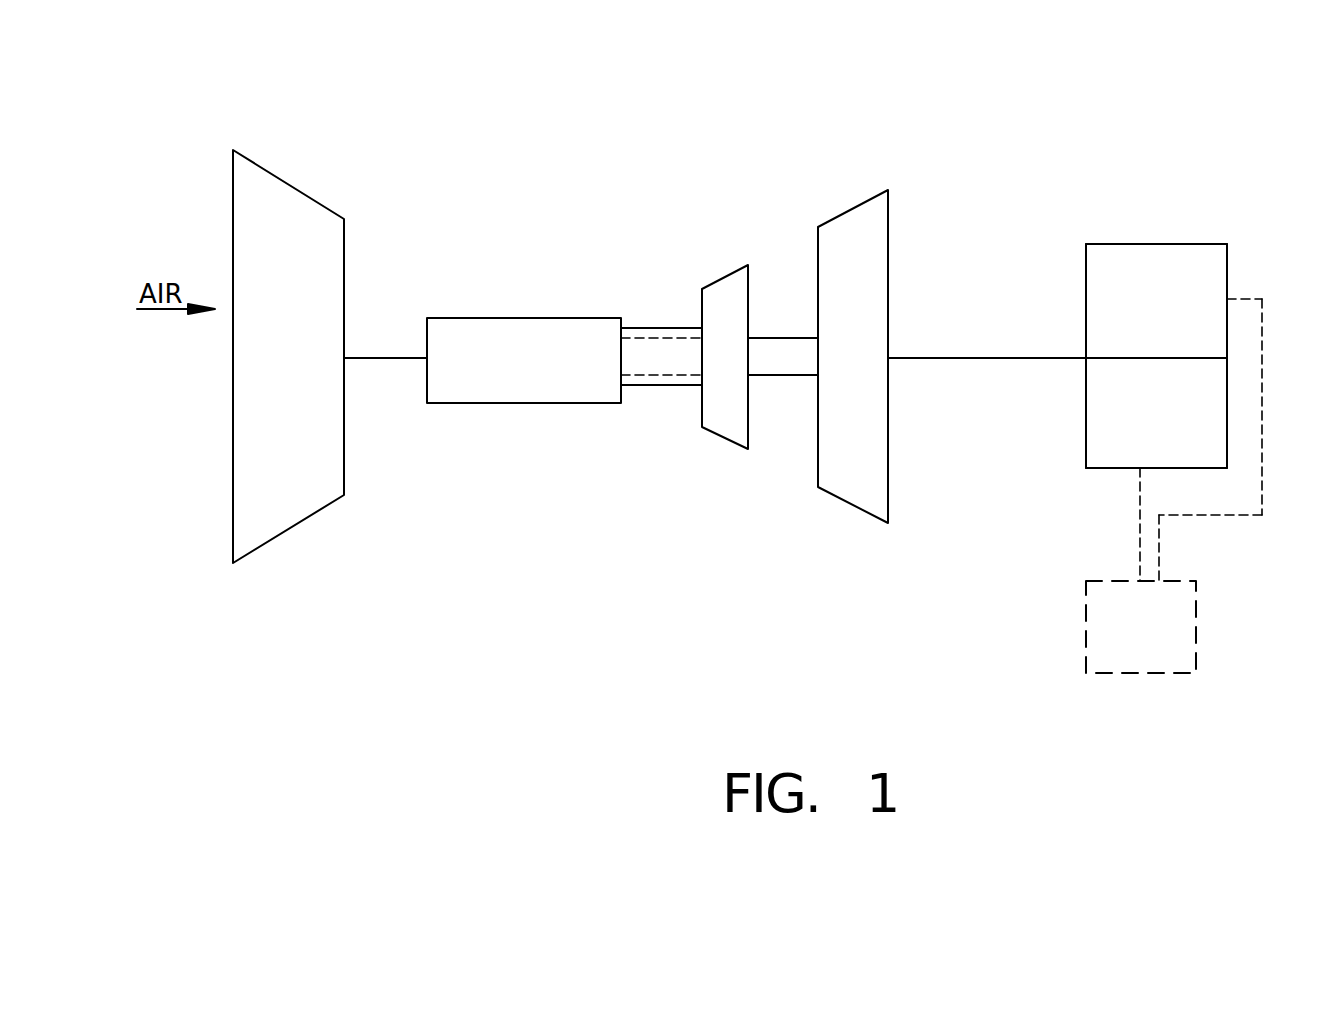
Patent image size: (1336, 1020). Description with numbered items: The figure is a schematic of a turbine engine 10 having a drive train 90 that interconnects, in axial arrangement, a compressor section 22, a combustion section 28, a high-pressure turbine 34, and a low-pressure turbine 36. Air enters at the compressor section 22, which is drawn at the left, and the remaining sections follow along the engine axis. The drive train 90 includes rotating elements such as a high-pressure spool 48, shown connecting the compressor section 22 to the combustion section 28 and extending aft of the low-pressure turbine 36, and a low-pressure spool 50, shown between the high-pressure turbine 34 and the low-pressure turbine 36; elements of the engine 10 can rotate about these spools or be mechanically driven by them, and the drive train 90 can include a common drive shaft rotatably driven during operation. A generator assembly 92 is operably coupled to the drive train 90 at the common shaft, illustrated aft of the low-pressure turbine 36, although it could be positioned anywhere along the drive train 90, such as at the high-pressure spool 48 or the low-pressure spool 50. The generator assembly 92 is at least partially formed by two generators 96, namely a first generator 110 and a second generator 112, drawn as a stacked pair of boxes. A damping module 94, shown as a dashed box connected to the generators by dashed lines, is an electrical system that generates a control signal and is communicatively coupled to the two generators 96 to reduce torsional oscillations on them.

The engine 10 is at (388, 83).
The compressor section 22 is at (306, 369).
The combustion section 28 is at (546, 367).
The high-pressure turbine 34 is at (746, 373).
The low-pressure turbine 36 is at (869, 364).
The high-pressure spool 48 is at (386, 356).
The low-pressure spool 50 is at (777, 376).
The drive train 90 is at (370, 368).
The generator assembly 92 is at (1075, 182).
The damping module 94 is at (1165, 643).
The two generators 96 is at (1162, 232).
The first generator 110 is at (1176, 312).
The second generator 112 is at (1176, 425).